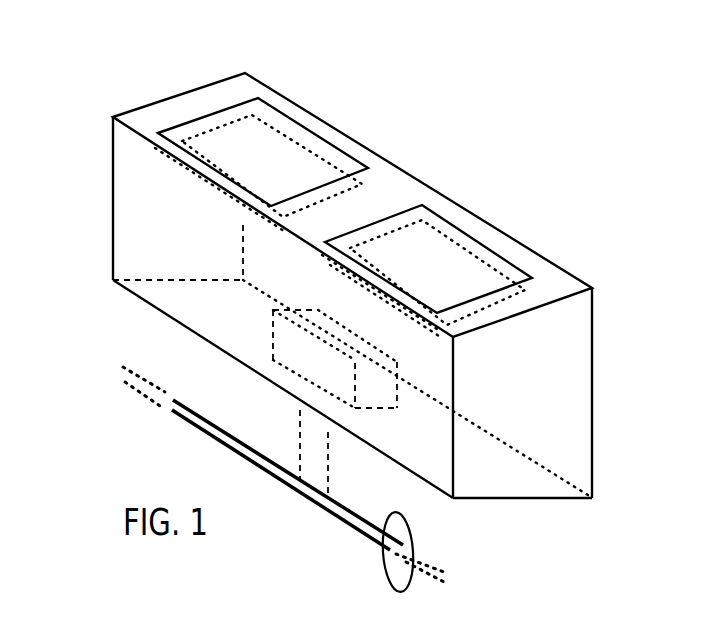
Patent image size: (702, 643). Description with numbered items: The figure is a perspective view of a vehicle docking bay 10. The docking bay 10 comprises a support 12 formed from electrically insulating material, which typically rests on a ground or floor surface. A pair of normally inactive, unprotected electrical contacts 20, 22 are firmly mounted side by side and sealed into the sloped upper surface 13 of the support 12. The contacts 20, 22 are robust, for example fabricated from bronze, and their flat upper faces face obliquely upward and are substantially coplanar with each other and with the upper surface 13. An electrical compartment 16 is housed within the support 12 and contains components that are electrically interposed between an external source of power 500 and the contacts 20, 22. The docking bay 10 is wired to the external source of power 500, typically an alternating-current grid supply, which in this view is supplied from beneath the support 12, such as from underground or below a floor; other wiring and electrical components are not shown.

The vehicle docking bay 10 is at (142, 76).
The support 12 is at (147, 210).
The sloped upper surface 13 is at (227, 90).
The electrical compartment 16 is at (308, 366).
The electrical contact 20 is at (285, 112).
The electrical contact 22 is at (452, 230).
The external source of power 500 is at (385, 573).